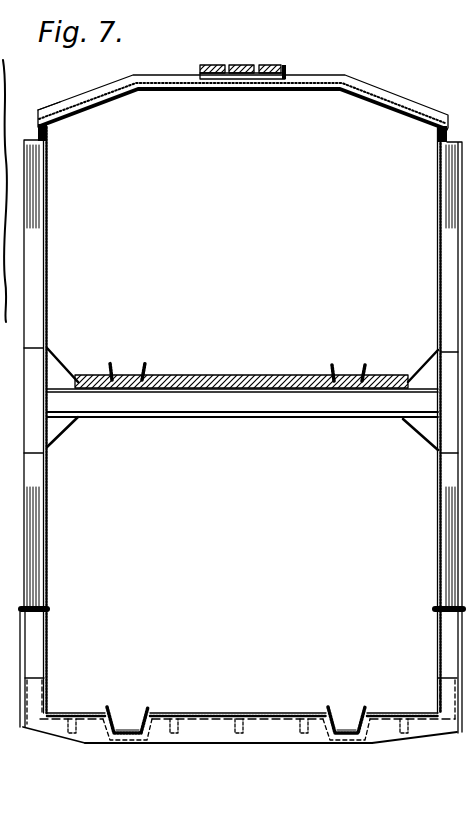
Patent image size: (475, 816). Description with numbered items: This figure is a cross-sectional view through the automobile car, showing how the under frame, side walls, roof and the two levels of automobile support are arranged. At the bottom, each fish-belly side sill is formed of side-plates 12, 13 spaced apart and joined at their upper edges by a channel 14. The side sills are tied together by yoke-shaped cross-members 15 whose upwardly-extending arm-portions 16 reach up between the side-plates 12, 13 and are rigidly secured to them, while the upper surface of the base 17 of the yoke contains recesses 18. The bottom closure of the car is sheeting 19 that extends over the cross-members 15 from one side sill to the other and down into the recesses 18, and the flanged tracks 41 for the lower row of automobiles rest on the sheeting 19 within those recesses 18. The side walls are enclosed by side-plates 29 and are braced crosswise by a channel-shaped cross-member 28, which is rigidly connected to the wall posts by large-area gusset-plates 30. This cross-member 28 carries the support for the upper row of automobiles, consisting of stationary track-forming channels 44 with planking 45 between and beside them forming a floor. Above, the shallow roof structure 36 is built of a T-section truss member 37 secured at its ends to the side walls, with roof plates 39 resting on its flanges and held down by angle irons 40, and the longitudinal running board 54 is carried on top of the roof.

The side-plate 12 is at (48, 629).
The side-plate 13 is at (20, 648).
The channel 14 is at (47, 596).
The cross-member 15 is at (100, 742).
The arm-portion 16 is at (33, 698).
The base 17 is at (218, 735).
The recess 18 is at (145, 720).
The sheeting 19 is at (230, 712).
The cross-member 28 is at (272, 420).
The side-plate 29 is at (47, 255).
The gusset-plate 30 is at (56, 364).
The roof structure 36 is at (344, 62).
The truss member 37 is at (410, 116).
The plate 39 is at (79, 110).
The angle iron 40 is at (200, 74).
The track 41 is at (128, 718).
The track-forming channel 44 is at (142, 362).
The planking 45 is at (94, 375).
The longitudinal running board 54 is at (253, 55).